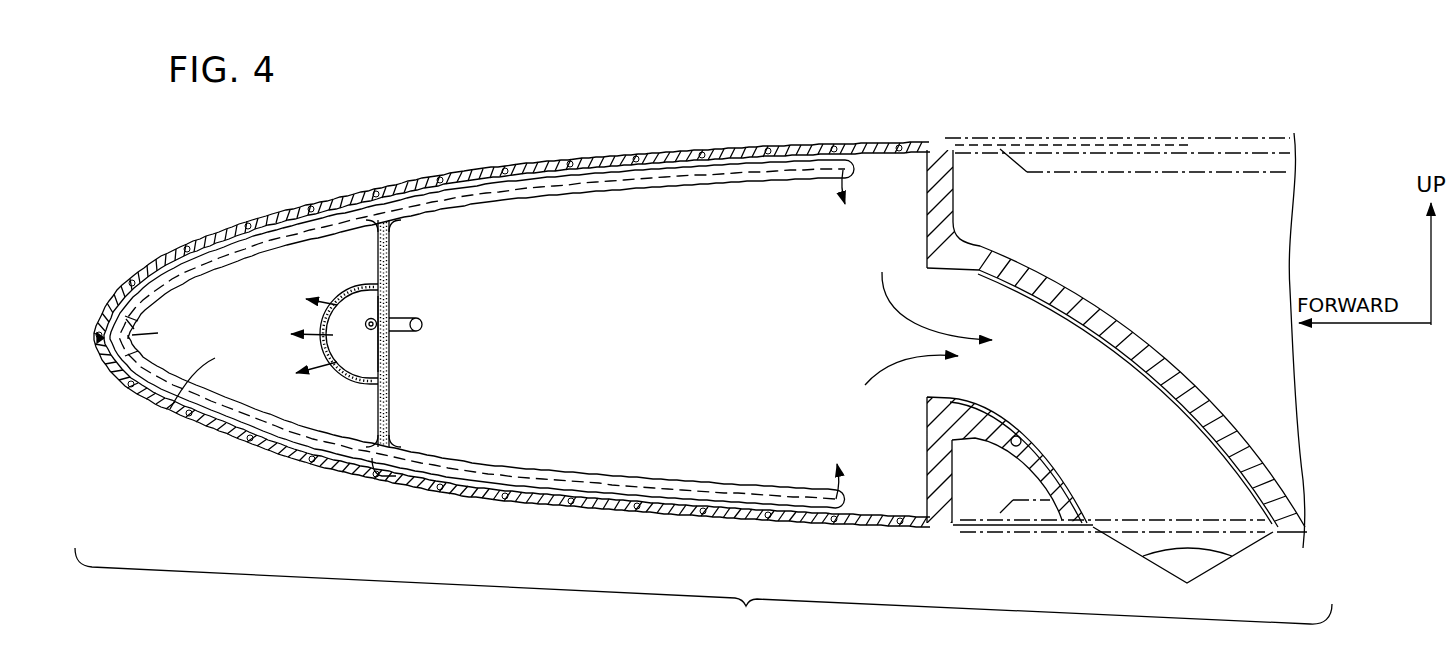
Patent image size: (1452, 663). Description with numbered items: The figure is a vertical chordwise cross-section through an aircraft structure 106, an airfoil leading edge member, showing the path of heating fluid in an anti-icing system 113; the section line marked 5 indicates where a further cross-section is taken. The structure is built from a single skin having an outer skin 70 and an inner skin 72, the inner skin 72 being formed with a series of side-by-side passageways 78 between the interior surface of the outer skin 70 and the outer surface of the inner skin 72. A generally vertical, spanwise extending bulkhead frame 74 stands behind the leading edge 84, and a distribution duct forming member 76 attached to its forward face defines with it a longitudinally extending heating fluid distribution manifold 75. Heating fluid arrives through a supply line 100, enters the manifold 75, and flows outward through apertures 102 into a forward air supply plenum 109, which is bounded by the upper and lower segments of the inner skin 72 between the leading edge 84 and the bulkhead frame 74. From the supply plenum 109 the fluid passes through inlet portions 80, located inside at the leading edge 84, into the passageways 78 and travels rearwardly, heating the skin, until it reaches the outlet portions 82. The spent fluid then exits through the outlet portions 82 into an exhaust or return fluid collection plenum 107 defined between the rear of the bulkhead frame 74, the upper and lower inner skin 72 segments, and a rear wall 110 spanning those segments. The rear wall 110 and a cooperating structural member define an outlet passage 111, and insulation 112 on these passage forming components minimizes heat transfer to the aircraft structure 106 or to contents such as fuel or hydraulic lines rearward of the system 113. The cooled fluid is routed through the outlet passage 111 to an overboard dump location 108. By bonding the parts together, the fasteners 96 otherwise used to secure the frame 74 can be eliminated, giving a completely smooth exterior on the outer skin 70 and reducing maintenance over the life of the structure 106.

The outer skin portion 70 is at (512, 334).
The inner skin portion 72 is at (628, 172).
The bulkhead frame 74 is at (393, 303).
The heating fluid distribution duct or manifold 75 is at (378, 303).
The distribution duct forming member 76 is at (370, 288).
The passageways 78 is at (540, 200).
The inlet portions 80 is at (140, 334).
The outlet portions 82 is at (826, 172).
The leading edge 84 is at (100, 340).
The fasteners 96 is at (392, 480).
The supply line 100 is at (405, 335).
The apertures 102 is at (336, 378).
The aircraft structure 106 is at (193, 192).
The exhaust air collection plenum 107 is at (563, 332).
The heating fluid overboard dump 108 is at (1168, 586).
The forward air supply plenum 109 is at (170, 409).
The rear wall or bulkhead 110 is at (928, 236).
The outlet passage 111 is at (1140, 417).
The insulation 112 is at (953, 212).
The anti-icing system 113 is at (703, 591).
The section line 5- 5 is at (215, 227).